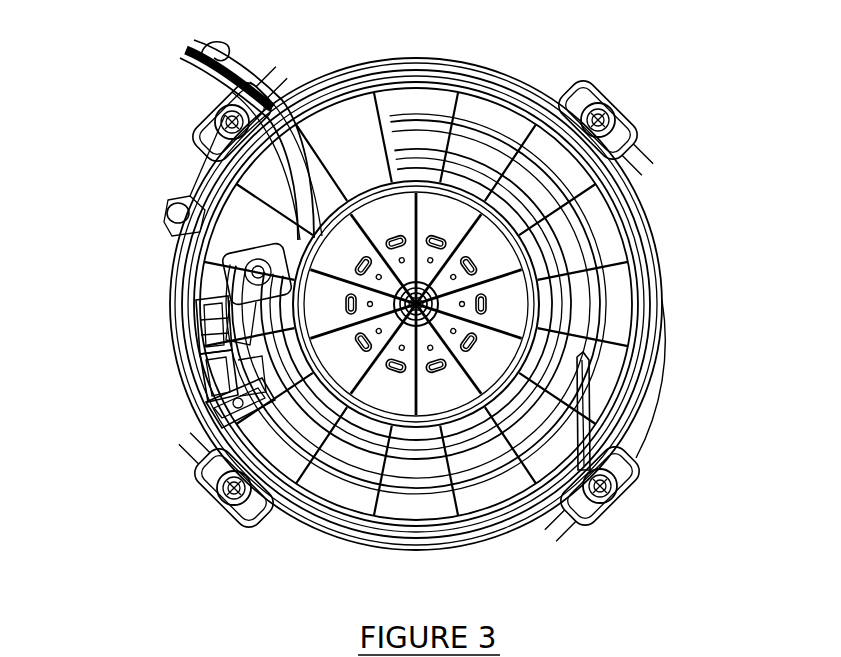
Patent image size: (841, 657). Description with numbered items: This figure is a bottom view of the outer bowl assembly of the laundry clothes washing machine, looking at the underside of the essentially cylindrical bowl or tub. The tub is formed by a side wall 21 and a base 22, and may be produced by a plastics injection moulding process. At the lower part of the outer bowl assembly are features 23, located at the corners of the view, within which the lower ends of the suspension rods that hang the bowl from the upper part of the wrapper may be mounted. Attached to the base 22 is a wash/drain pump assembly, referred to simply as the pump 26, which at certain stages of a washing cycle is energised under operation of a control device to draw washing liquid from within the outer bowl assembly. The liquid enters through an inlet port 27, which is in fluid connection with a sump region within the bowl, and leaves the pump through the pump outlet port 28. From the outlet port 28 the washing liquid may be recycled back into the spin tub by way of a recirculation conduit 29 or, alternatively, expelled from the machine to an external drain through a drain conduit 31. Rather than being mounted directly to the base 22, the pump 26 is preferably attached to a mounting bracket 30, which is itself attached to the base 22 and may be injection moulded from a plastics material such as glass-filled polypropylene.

The side wall 21 is at (489, 64).
The base 22 is at (658, 268).
The features 23 is at (617, 103).
The wash/drain pump assembly 26 is at (198, 393).
The inlet port 27 is at (180, 283).
The pump outlet port 28 is at (176, 322).
The recirculation conduit 29 is at (166, 213).
The mounting bracket 30 is at (182, 370).
The drain conduit 31 is at (279, 122).